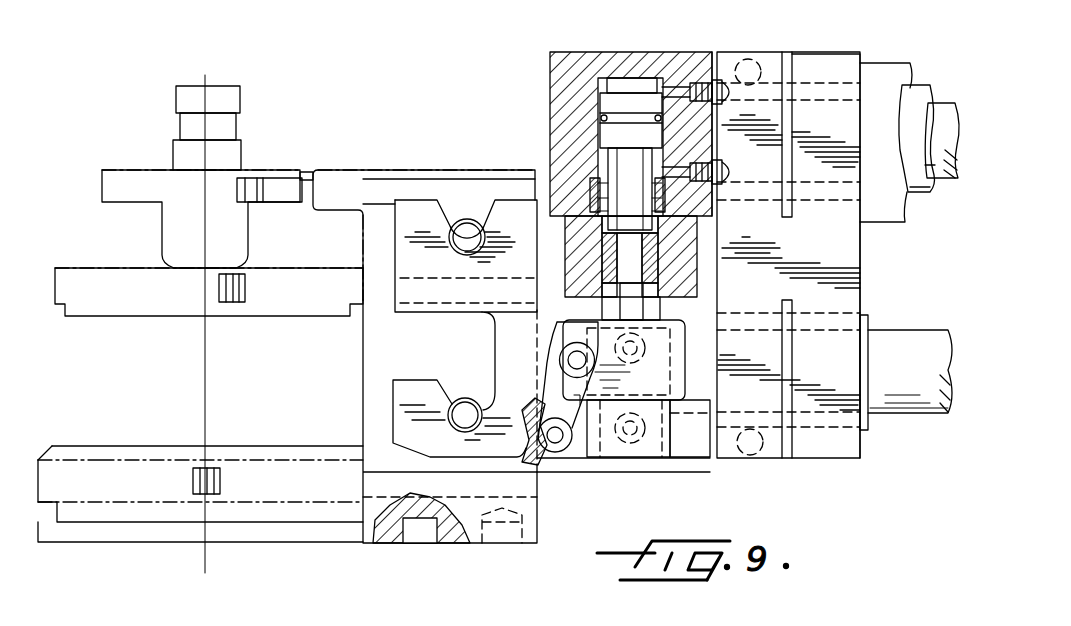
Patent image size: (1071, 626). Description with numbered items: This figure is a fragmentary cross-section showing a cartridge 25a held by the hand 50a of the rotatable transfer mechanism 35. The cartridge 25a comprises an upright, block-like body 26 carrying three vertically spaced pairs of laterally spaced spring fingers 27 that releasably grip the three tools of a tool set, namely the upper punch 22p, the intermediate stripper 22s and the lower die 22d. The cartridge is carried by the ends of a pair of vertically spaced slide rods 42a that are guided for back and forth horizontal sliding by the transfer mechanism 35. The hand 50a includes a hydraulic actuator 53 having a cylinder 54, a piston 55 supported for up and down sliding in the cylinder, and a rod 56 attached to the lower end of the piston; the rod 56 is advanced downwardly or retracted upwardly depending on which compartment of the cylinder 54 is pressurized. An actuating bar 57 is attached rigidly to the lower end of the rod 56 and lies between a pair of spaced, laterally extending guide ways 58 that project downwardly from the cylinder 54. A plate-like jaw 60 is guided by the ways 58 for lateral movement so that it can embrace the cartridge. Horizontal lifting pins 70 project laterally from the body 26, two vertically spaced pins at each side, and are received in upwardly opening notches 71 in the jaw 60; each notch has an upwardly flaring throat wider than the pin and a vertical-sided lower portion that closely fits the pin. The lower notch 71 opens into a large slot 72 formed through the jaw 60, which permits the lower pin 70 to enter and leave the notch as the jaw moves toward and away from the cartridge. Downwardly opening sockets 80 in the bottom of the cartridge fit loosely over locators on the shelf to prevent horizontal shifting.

The upper punch 22p is at (244, 247).
The intermediate stripper 22s is at (107, 277).
The lower die 22d is at (122, 468).
The spring fingers 27 is at (273, 188).
The cartridge 25a is at (378, 221).
The body 26 is at (366, 360).
The jaw 60 is at (397, 393).
The lifting elements 70 is at (472, 232).
The notches 71 is at (463, 232).
The slot 72 is at (428, 386).
The sockets 80 is at (425, 542).
The hand 50a is at (516, 212).
The hydraulic actuator 53 is at (589, 50).
The cylinder 54 is at (683, 60).
The piston 55 is at (615, 96).
The rod 56 is at (632, 267).
The actuating bar 57 is at (655, 249).
The guide ways 58 is at (690, 283).
The rotatable transfer mechanism 35 is at (813, 52).
The slide rods 42a is at (946, 105).